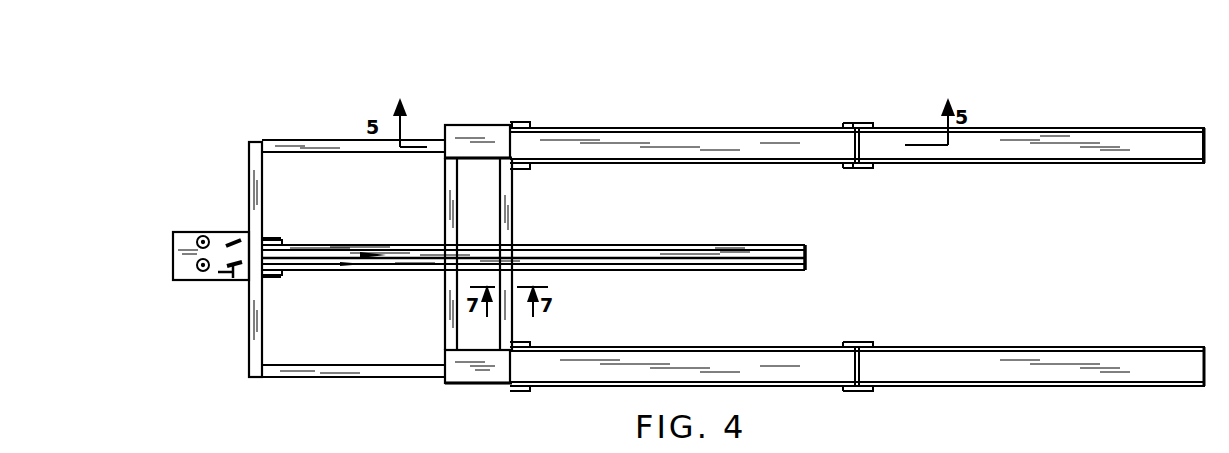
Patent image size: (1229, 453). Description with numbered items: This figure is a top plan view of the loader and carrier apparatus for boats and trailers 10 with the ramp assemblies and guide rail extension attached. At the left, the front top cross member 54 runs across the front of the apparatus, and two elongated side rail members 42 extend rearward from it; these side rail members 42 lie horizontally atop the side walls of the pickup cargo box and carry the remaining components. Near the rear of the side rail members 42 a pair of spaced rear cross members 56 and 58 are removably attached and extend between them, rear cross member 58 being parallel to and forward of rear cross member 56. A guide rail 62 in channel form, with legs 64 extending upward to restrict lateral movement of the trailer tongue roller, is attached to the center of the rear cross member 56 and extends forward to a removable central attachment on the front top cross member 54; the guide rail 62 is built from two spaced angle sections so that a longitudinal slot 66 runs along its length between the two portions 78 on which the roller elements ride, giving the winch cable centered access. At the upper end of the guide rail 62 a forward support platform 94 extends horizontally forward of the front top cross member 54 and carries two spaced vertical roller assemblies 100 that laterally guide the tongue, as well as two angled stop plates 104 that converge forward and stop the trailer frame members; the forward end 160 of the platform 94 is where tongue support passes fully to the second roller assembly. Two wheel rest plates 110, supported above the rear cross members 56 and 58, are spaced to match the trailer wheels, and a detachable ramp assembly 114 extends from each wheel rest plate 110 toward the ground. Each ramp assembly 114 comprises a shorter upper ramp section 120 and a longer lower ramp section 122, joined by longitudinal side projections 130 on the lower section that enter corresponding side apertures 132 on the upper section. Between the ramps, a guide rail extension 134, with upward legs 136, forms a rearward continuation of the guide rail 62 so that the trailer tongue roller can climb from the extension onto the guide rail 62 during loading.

The loader and carrier apparatus for boats and trailers 10 is at (212, 334).
The side rail member 42 is at (312, 147).
The front top cross member 54 is at (265, 212).
The rear cross member 56 is at (513, 210).
The rear cross member 58 is at (451, 212).
The guide rail 62 is at (377, 246).
The legs 64 is at (395, 269).
The longitudinal slot 66 is at (322, 257).
The portion of guide rail 78 is at (430, 262).
The forward support platform 94 is at (220, 234).
The vertical roller assembly 100 is at (201, 238).
The angled stop plate 104 is at (233, 272).
The wheel rest plate 110 is at (504, 128).
The ramp assembly 114 is at (853, 122).
The upper ramp section 120 is at (780, 129).
The lower ramp section 122 is at (1035, 129).
The longitudinal side projection 130 is at (868, 167).
The side aperture 132 is at (849, 166).
The guide rail extension 134 is at (628, 235).
The legs 136 is at (722, 268).
The forward end of platform 160 is at (172, 244).